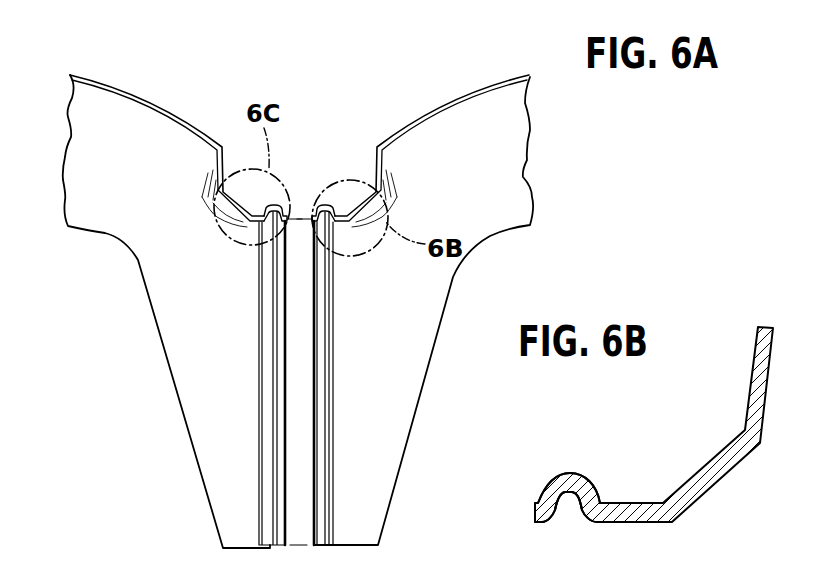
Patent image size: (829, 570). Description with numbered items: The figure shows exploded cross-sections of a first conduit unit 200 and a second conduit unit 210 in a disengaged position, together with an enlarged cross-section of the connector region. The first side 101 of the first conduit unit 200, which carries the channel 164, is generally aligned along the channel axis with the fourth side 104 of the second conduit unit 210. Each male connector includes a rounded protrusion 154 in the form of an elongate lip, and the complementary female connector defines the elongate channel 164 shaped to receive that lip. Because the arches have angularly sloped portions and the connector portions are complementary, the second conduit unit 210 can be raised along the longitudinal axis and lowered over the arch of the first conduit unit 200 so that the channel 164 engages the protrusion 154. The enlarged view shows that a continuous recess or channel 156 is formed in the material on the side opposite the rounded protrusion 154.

In FIG. 6A, the second conduit unit 210 is at (173, 100).
In FIG. 6A, the first conduit unit 200 is at (484, 77).
In FIG. 6B, the first conduit unit 200 is at (720, 420).
In FIG. 6A, the channel 164 is at (273, 206).
In FIG. 6A, the protrusion 154 is at (327, 206).
In FIG. 6B, the protrusion 154 is at (564, 472).
In FIG. 6A, the fourth side 104 is at (290, 303).
In FIG. 6A, the first side 101 is at (310, 358).
In FIG. 6B, the channel 156 is at (573, 514).